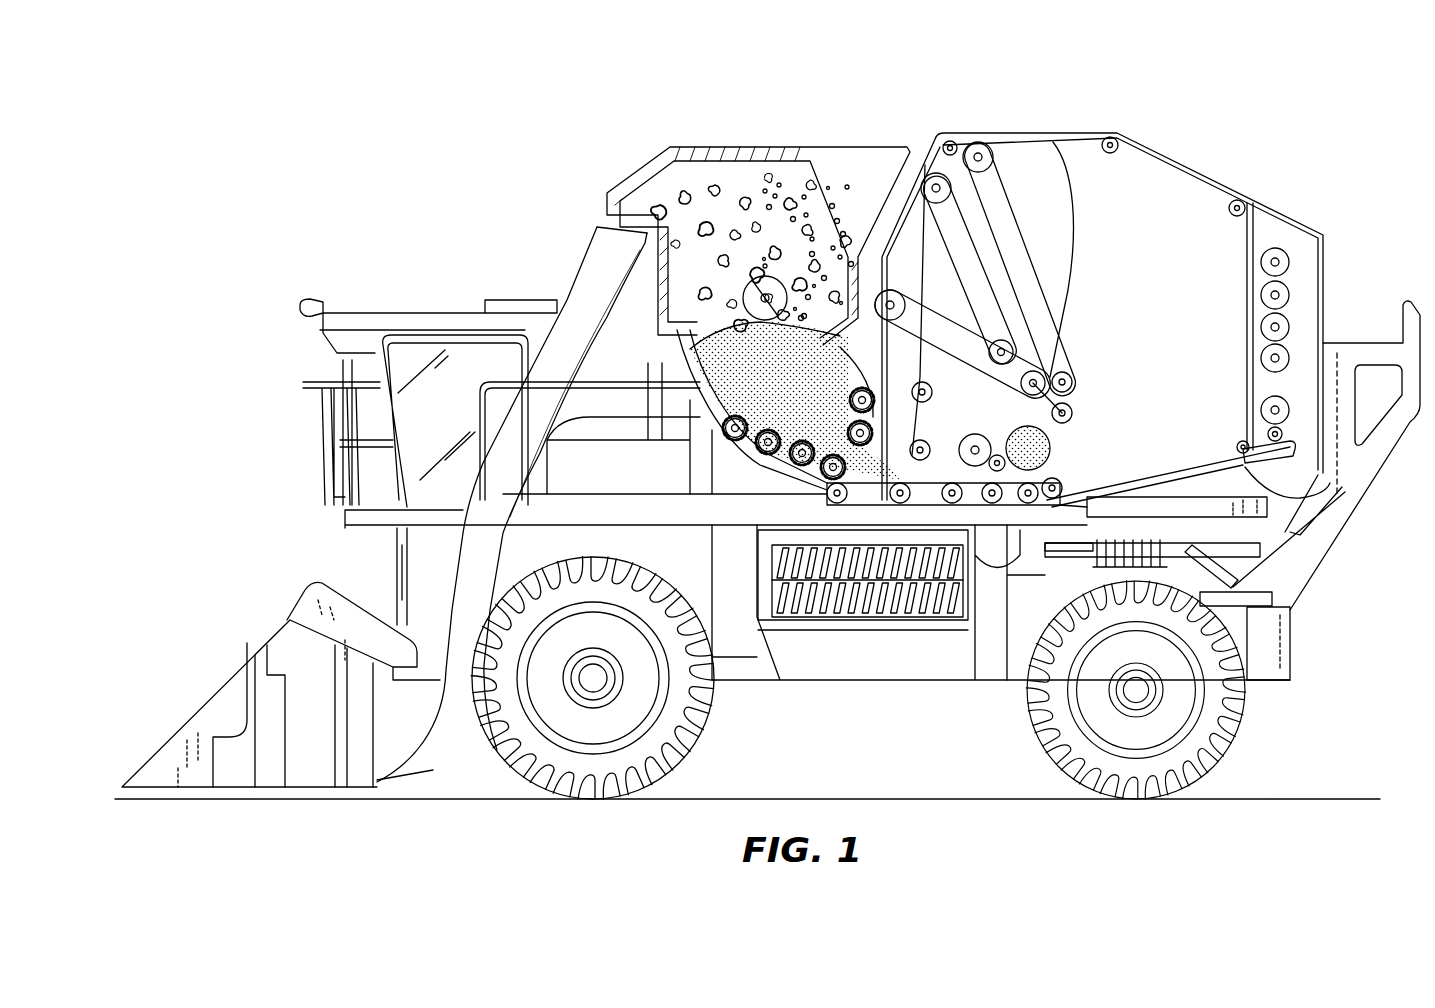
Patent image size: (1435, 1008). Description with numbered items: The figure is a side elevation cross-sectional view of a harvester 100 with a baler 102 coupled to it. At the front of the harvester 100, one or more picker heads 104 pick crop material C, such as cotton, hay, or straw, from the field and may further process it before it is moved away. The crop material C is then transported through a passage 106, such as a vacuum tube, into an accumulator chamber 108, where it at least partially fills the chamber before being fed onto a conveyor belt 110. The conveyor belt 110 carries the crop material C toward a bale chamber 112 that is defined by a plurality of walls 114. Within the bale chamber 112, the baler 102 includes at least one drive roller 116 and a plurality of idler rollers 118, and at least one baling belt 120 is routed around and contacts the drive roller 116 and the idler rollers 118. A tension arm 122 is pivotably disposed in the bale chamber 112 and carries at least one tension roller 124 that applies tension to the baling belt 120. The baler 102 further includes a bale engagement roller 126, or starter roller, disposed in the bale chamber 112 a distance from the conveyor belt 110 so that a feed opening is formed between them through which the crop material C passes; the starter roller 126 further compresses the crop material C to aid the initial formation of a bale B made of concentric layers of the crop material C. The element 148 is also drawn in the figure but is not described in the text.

The harvester 100 is at (346, 157).
The baler 102 is at (1221, 161).
The picker head 104 is at (228, 705).
The passage 106 is at (553, 360).
The accumulator chamber 108 is at (819, 222).
The conveyor belt 110 is at (920, 455).
The bale chamber 112 is at (1139, 184).
The walls 114 is at (884, 225).
The drive roller 116 is at (934, 178).
The idler rollers 118 is at (982, 142).
The baling belt 120 is at (921, 240).
The tension arm 122 is at (945, 338).
The tension roller 124 is at (1072, 408).
The bale engagement roller 126 is at (1012, 505).
The conveyor frame 148 is at (990, 497).
The bale B is at (1053, 438).
The crop material C is at (722, 198).